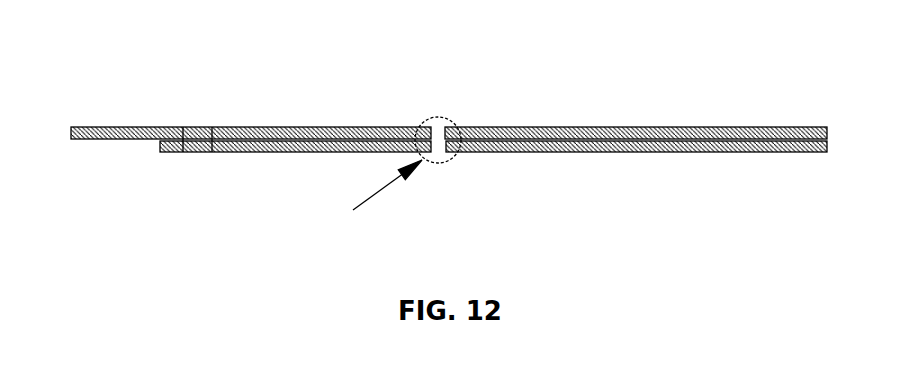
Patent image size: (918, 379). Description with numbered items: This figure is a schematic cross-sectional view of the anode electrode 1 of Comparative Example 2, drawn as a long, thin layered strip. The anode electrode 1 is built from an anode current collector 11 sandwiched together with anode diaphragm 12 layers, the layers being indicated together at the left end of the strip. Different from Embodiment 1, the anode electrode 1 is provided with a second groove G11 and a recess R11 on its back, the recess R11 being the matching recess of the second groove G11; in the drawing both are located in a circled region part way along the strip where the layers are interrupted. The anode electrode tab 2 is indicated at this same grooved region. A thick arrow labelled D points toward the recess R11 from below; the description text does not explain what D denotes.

The anode electrode 1 is at (264, 97).
The anode current collector 11 is at (212, 126).
The anode diaphragm 12 is at (183, 126).
The anode electrode tab 2 is at (447, 122).
The second groove G11 is at (427, 118).
The recess matching with the second groove R11 is at (435, 150).
The direction D is at (377, 198).